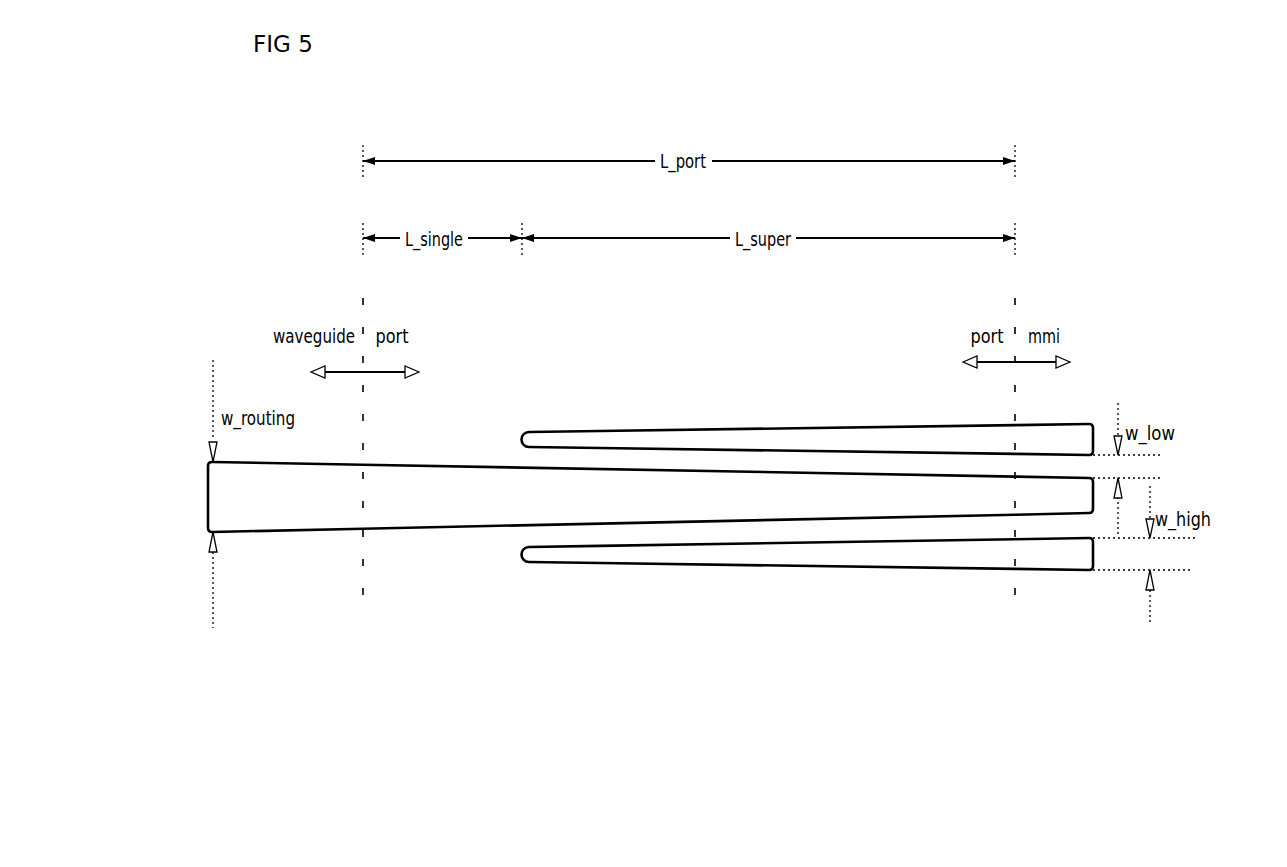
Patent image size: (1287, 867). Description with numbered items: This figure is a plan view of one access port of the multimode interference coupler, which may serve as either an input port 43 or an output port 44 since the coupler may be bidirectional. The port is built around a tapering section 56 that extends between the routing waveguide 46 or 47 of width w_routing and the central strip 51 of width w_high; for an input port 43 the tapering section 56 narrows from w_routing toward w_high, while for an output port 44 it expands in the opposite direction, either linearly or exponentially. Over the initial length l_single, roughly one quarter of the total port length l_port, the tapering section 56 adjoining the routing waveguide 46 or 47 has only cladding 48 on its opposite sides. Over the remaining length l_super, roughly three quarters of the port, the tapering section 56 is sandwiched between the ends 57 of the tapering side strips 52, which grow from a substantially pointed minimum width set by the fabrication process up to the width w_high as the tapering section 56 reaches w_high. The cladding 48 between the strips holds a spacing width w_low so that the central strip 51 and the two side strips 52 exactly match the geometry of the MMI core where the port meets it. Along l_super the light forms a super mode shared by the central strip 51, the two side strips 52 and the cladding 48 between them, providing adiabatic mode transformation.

The input port 43 is at (712, 540).
The output port 44 is at (675, 658).
The first routing waveguide 46 is at (262, 578).
The second routing waveguide 47 is at (268, 512).
The cladding strip 48 is at (540, 458).
The central strip 51 is at (1082, 493).
The tapering side strip 52 is at (1077, 430).
The tapering section 56 is at (435, 512).
The end of tapering side strip 57 is at (830, 440).